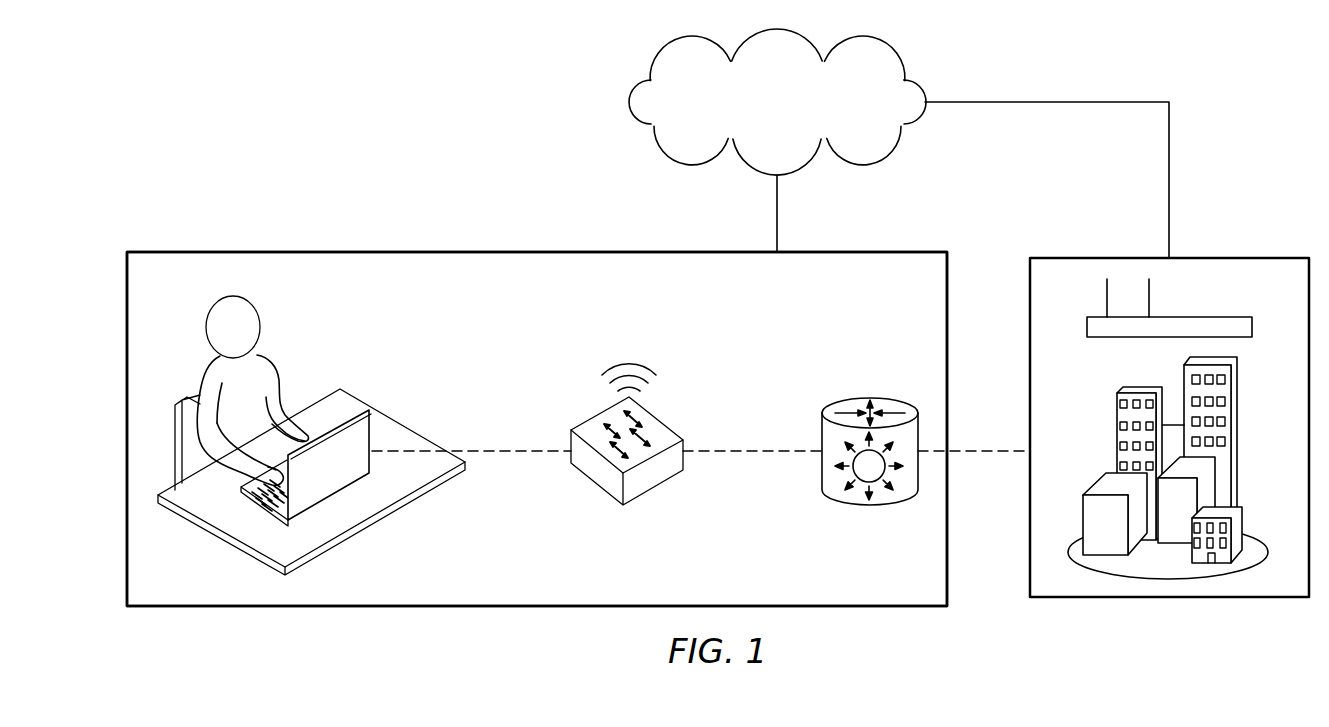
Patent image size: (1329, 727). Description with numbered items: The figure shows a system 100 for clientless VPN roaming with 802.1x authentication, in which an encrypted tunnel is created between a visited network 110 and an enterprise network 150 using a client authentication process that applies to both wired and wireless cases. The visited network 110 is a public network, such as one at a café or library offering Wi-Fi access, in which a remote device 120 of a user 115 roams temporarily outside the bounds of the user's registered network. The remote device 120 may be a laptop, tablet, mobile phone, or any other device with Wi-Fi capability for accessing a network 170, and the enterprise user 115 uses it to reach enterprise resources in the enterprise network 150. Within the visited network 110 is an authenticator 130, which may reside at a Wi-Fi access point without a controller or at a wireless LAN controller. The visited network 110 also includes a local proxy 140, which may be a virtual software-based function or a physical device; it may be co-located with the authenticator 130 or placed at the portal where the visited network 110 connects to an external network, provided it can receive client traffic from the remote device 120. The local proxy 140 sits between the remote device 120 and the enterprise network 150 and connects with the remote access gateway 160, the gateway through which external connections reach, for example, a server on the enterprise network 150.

The system 100 is at (362, 89).
The visited network 110 is at (263, 252).
The user 115 is at (275, 358).
The remote device 120 is at (362, 428).
The authenticator 130 is at (655, 415).
The local proxy 140 is at (845, 400).
The enterprise network 150 is at (1228, 257).
The remote access gateway 160 is at (1177, 316).
The network 170 is at (761, 116).